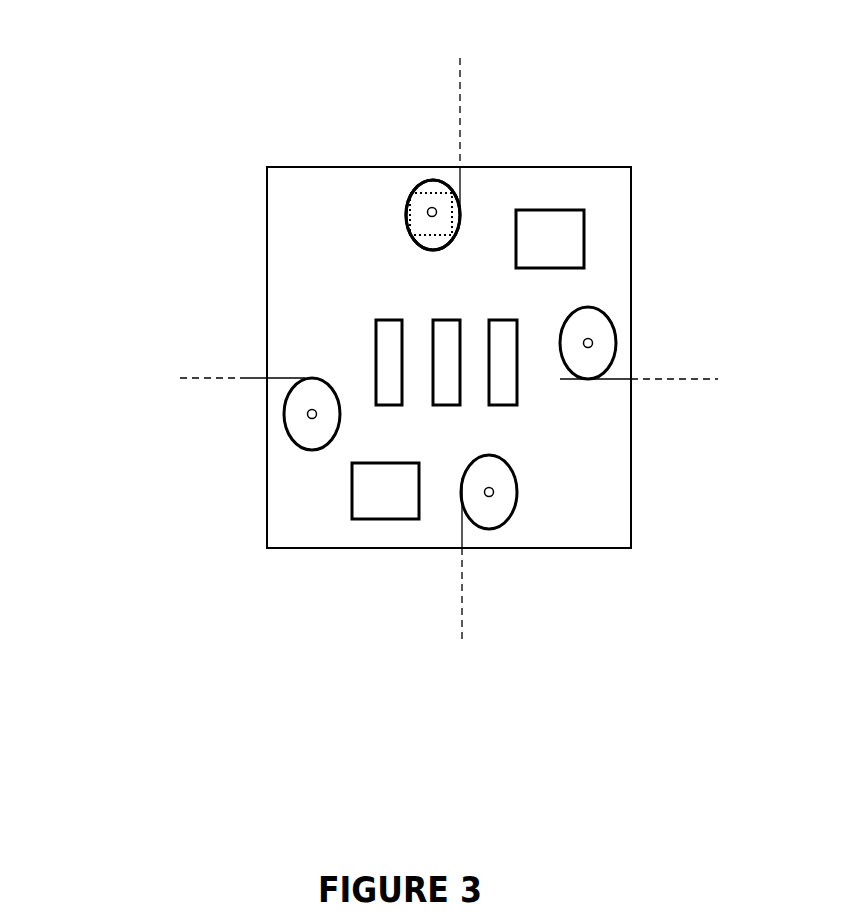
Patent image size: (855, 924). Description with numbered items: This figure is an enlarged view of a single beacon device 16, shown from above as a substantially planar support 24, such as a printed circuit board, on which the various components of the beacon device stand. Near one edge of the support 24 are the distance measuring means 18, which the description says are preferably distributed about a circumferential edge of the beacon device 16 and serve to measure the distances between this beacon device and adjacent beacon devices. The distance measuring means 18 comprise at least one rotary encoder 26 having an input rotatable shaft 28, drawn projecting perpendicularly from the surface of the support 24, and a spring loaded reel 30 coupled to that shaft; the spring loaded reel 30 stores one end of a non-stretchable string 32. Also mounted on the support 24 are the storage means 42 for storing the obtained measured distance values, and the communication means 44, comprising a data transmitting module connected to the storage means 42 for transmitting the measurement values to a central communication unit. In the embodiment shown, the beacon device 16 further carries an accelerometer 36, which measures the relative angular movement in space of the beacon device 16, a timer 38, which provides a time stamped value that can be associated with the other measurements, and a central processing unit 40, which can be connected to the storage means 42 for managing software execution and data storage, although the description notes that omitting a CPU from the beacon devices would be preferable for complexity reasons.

The beacon device 16 is at (152, 110).
The distance measuring means 18 is at (463, 217).
The support 24 is at (560, 180).
The rotary encoder 26 is at (420, 210).
The input rotatable shaft 28 is at (432, 207).
The spring loaded reel 30 is at (428, 250).
The non-stretchable string 32 is at (457, 150).
The accelerometer 36 is at (386, 496).
The timer 38 is at (567, 228).
The central processing unit 40 is at (385, 370).
The storage means 42 is at (442, 332).
The communication means 44 is at (505, 375).